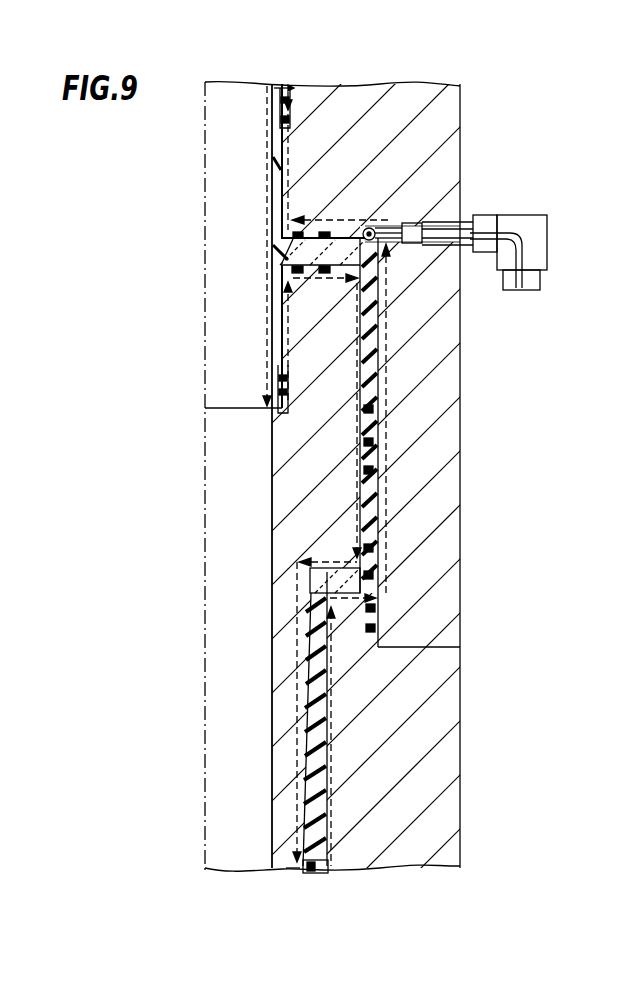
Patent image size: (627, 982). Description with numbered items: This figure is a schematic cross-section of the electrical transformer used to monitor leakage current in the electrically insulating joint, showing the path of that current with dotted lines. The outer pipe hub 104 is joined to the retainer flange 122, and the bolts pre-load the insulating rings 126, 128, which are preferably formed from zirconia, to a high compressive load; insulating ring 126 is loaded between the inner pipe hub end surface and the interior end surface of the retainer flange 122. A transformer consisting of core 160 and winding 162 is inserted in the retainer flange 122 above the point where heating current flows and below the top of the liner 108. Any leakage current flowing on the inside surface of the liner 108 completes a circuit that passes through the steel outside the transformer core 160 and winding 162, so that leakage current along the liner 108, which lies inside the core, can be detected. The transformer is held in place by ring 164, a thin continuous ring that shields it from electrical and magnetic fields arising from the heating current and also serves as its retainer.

The outer pipe hub 104 is at (432, 760).
The liner 108 is at (273, 183).
The retainer flange 122 is at (436, 446).
The insulating ring 126 is at (292, 254).
The insulating ring 128 is at (348, 580).
The transformer core 160 is at (420, 222).
The winding 162 is at (452, 222).
The ring 164 is at (374, 240).